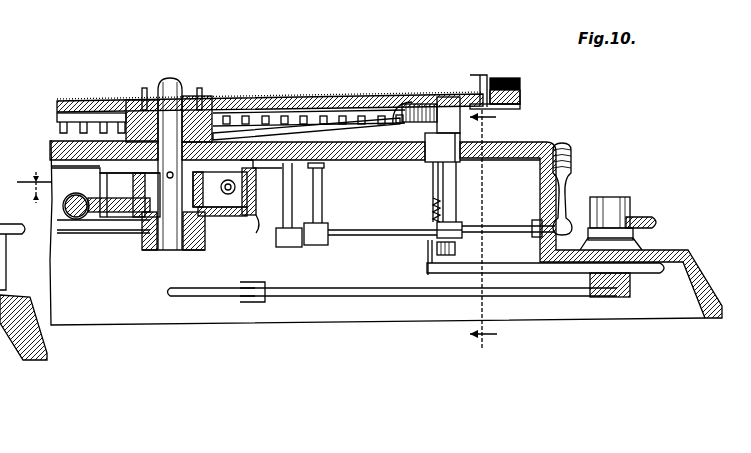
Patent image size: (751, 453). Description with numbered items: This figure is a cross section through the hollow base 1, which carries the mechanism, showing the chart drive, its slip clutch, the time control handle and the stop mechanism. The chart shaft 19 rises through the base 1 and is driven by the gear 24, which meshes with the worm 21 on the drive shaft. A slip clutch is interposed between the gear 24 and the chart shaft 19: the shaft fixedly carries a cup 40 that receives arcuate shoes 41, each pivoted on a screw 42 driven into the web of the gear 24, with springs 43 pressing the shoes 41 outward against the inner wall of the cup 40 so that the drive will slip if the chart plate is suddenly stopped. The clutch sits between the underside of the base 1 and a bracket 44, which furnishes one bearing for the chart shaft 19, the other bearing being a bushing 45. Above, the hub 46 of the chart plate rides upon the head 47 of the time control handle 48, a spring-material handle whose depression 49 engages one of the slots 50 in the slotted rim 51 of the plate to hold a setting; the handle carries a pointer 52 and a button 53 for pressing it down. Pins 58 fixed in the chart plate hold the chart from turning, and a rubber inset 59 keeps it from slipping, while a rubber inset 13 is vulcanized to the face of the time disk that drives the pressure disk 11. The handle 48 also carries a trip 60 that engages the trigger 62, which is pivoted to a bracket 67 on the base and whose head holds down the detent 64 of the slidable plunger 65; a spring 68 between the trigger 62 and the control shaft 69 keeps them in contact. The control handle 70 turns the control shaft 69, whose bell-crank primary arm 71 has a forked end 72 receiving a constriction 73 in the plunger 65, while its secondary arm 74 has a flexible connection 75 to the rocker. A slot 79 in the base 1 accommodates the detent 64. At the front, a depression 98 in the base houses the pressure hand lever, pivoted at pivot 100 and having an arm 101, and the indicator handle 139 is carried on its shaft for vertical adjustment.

The hollow base 1 is at (556, 129).
The pressure disk 11 is at (494, 233).
The rubber inset 13 is at (32, 179).
The chart shaft 19 is at (165, 87).
The worm 21 is at (88, 218).
The gear 24 is at (252, 258).
The cup 40 is at (98, 170).
The arcuate shoes 41 is at (130, 238).
The screw 42 is at (120, 216).
The springs 43 is at (203, 243).
The bracket 44 is at (142, 250).
The bushing 45 is at (216, 112).
The hub 46 is at (137, 122).
The head 47 is at (247, 117).
The time control handle 48 is at (297, 122).
The depression 49 is at (445, 115).
The slots 50 is at (57, 118).
The slotted rim 51 is at (92, 118).
The pointer 52 is at (480, 75).
The button 53 is at (510, 78).
The pins 58 is at (144, 88).
The rubber inset 59 is at (374, 94).
The trip 60 is at (412, 126).
The trigger 62 is at (434, 178).
The detent 64 is at (458, 153).
The slidable plunger 65 is at (448, 202).
The bracket 67 is at (523, 257).
The spring 68 is at (432, 212).
The control shaft 69 is at (512, 223).
The control handle 70 is at (567, 157).
The primary arm 71 is at (425, 236).
The forked end 72 is at (433, 246).
The constriction 73 is at (251, 190).
The secondary arm 74 is at (322, 216).
The flexible connection 75 is at (323, 168).
The slot 79 is at (523, 153).
The depression 98 is at (670, 249).
The pivot 100 is at (617, 189).
The arm 101 is at (316, 292).
The indicator handle 139 is at (35, 263).